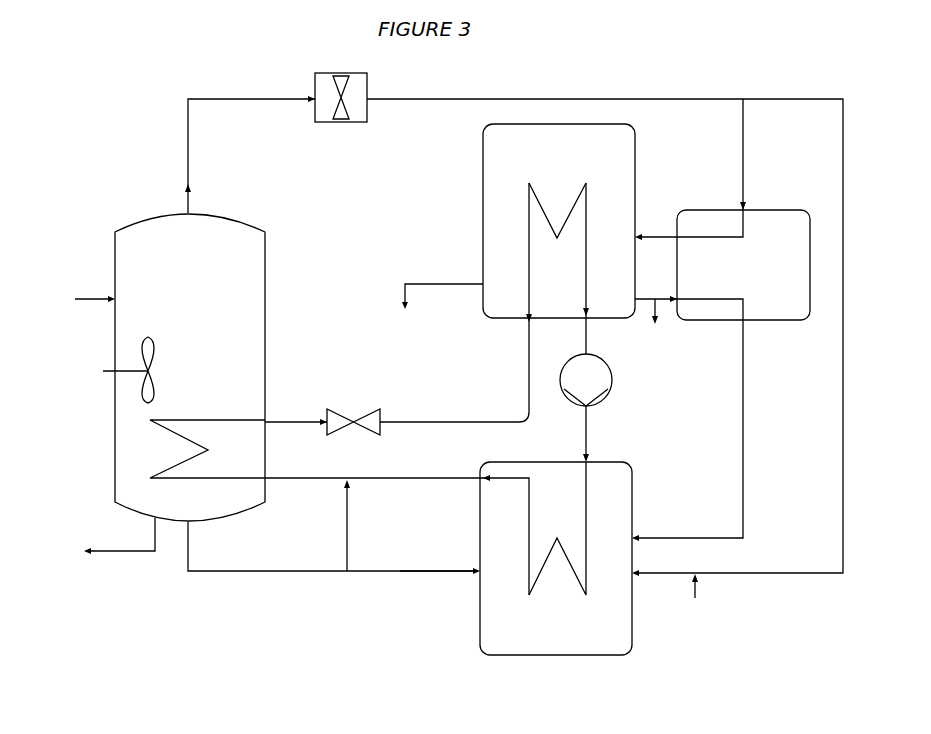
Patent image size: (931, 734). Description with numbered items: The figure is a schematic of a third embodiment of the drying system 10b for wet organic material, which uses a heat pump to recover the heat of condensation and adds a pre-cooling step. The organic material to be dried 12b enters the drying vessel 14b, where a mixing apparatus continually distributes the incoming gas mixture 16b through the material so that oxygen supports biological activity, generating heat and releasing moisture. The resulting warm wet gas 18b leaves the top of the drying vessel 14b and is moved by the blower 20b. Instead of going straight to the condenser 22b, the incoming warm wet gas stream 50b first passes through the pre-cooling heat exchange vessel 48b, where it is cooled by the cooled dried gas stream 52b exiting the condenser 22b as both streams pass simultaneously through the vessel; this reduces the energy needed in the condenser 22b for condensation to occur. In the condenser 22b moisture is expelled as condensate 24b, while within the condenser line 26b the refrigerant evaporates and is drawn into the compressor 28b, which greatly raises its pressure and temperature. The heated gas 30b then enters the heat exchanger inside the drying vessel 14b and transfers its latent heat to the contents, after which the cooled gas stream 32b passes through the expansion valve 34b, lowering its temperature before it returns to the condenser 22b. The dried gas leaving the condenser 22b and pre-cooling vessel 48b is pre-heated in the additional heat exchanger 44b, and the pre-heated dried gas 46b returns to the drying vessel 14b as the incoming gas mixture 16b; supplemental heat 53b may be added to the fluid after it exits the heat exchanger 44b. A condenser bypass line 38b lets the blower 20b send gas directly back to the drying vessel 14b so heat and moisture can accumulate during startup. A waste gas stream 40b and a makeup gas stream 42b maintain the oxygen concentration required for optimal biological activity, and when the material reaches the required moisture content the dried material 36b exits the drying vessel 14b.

The drying system 10b is at (76, 137).
The organic material to be dried 12b is at (82, 299).
The drying vessel 14b is at (190, 367).
The gas mixture 16b is at (334, 548).
The warm wet gas 18b is at (250, 154).
The blower 20b is at (342, 113).
The condenser 22b is at (559, 221).
The condensate 24b is at (442, 302).
The condenser line 26b is at (557, 268).
The compressor 28b is at (620, 408).
The heated gas 30b is at (397, 535).
The cooled gas stream 32b is at (207, 441).
The expansion valve 34b is at (397, 309).
The dried material 36b is at (119, 557).
The condenser bypass line 38b is at (838, 182).
The waste gas stream 40b is at (657, 327).
The makeup gas stream 42b is at (695, 603).
The additional heat exchanger 44b is at (556, 558).
The pre-heated dried gas 46b is at (438, 574).
The pre-cooling heat exchange vessel 48b is at (743, 265).
The incoming warm wet gas stream 50b is at (690, 169).
The cooled dried gas stream 52b is at (687, 412).
The supplemental heat 53b is at (385, 525).